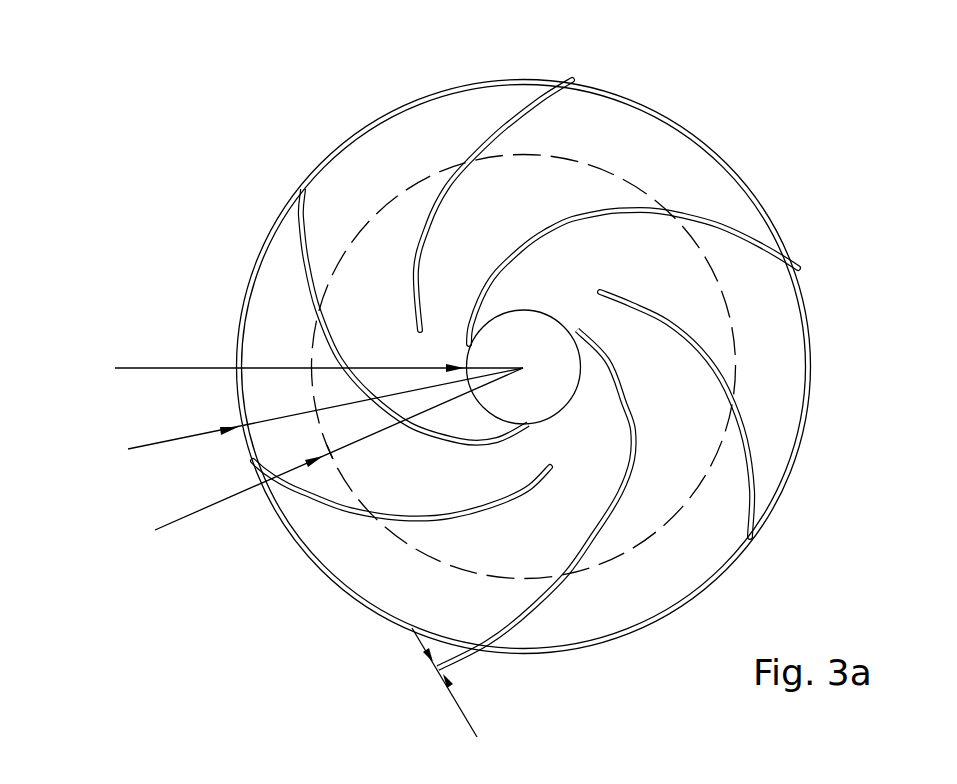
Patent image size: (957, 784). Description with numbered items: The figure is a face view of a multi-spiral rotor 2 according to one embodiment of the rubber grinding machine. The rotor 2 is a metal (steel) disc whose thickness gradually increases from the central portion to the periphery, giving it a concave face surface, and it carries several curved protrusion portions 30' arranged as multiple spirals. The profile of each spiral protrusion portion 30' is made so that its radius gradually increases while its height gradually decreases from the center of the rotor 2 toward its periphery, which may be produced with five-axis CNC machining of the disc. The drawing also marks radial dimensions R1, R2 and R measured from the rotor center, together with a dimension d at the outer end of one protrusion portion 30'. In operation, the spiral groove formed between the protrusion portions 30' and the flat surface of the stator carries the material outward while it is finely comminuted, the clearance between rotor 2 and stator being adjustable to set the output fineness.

The spiral protrusion portion 30' is at (411, 345).
The rotor 2 is at (713, 148).
The hub radius R1 is at (319, 351).
The outer radius R2 is at (325, 408).
The intermediate radius R is at (338, 449).
The blade protrusion d is at (444, 690).